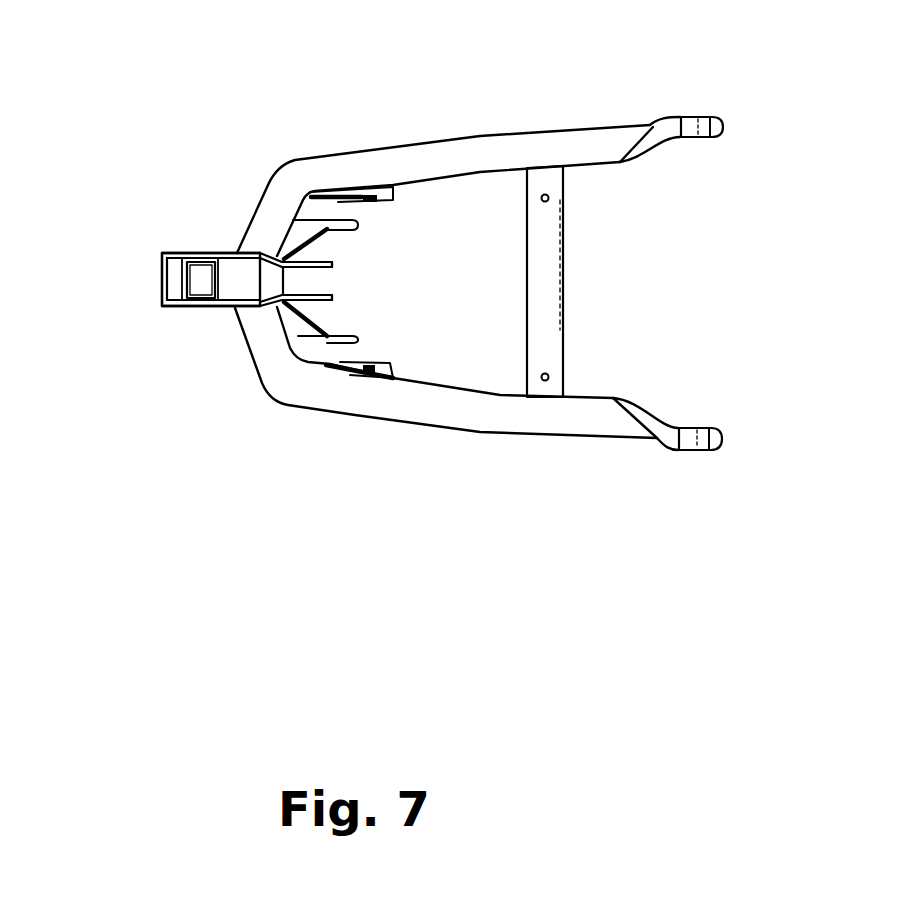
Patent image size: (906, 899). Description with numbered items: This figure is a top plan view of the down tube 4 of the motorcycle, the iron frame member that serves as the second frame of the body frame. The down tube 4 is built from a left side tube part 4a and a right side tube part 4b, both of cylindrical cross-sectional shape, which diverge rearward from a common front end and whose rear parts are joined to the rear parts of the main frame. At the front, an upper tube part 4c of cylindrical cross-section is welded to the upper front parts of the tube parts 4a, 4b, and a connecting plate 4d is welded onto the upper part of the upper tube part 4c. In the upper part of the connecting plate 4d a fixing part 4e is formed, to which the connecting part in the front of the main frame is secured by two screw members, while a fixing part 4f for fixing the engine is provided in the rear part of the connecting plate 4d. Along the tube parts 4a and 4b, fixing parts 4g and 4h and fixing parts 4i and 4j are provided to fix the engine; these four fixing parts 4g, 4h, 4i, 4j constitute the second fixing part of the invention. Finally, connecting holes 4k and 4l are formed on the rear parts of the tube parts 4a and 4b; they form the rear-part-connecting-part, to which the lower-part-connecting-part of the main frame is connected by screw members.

The down tube 4 is at (280, 183).
The left side tube part 4a is at (448, 412).
The right side tube part 4b is at (423, 153).
The upper tube part 4c is at (173, 287).
The connecting plate 4d is at (160, 258).
The fixing part 4e is at (193, 253).
The fixing part 4f is at (333, 254).
The fixing part 4g is at (296, 336).
The fixing part 4h is at (353, 370).
The fixing part 4i is at (306, 230).
The fixing part 4j is at (354, 195).
The connecting hole 4k is at (707, 455).
The connecting hole 4l is at (710, 113).